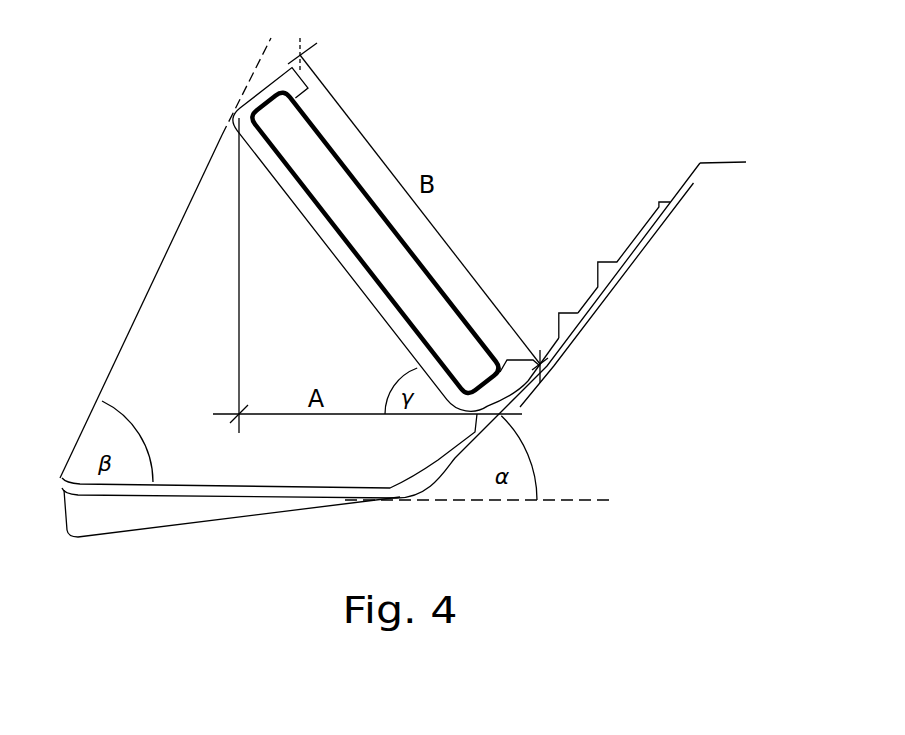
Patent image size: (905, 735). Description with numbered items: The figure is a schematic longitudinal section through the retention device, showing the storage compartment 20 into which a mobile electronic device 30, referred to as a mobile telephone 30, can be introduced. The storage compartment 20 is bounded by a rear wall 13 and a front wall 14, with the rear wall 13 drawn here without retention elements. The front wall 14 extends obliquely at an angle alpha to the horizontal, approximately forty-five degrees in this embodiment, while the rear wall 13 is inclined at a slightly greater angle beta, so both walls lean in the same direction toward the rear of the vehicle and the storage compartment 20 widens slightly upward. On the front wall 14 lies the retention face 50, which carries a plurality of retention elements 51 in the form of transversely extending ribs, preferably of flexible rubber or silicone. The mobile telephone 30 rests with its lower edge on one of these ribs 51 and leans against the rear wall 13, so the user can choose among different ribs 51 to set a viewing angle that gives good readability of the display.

The rear wall 13 is at (137, 312).
The front wall 14 is at (693, 183).
The storage compartment 20 is at (232, 238).
The mobile electronic device 30 is at (310, 163).
The retention face 50 is at (632, 228).
The retention elements 51 is at (562, 312).